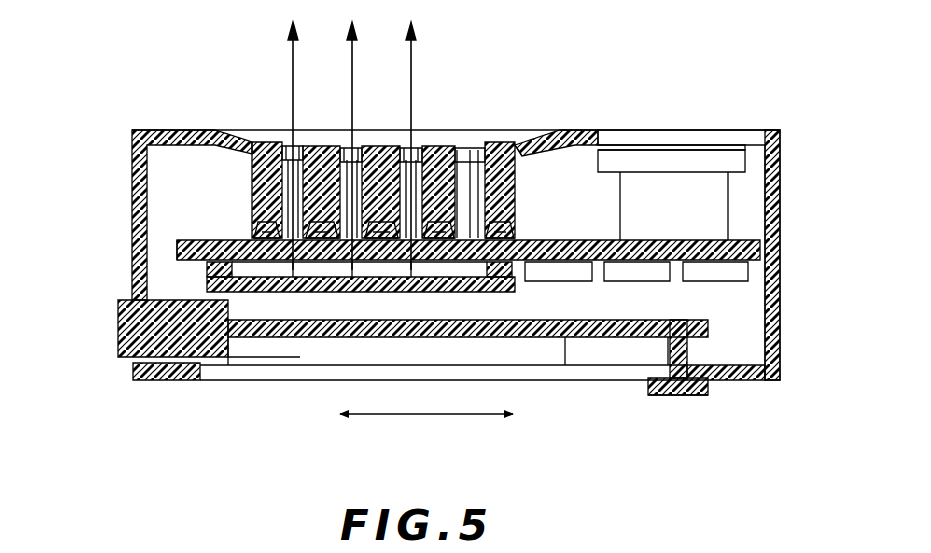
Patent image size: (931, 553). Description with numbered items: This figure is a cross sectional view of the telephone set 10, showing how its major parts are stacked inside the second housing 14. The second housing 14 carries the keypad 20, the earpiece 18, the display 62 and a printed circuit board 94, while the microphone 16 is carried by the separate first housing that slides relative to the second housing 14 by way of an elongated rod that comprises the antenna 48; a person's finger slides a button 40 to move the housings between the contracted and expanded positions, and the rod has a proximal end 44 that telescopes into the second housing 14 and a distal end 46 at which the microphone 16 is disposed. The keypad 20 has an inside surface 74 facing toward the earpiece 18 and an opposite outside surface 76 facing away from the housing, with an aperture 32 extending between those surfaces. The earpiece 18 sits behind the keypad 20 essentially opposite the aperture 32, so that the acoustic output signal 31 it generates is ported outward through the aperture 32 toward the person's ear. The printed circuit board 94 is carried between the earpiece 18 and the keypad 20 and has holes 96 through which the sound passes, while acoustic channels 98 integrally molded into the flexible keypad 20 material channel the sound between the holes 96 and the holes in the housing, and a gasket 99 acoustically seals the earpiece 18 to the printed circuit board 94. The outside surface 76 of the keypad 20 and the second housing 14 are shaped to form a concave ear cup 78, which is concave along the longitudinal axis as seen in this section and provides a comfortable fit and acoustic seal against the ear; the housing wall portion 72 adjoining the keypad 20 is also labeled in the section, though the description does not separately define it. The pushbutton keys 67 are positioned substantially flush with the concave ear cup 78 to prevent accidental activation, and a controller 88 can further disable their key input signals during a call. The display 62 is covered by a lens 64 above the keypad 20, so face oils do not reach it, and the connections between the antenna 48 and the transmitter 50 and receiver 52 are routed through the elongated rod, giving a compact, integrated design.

The telephone set 10 is at (742, 502).
The second housing 14 is at (780, 163).
The microphone 16 is at (118, 362).
The earpiece 18 is at (207, 286).
The keypad 20 is at (462, 148).
The acoustic output signal 31 is at (354, 135).
The aperture 32 is at (300, 170).
The button 40 is at (698, 396).
The proximal end 44 is at (708, 330).
The distal end 46 is at (118, 316).
The antenna 48 is at (567, 340).
The transmitter 50 is at (560, 281).
The receiver 52 is at (637, 281).
The display 62 is at (712, 160).
The lens 64 is at (660, 145).
The pushbutton keys 67 is at (503, 140).
The housing wall 72 is at (250, 140).
The inside surface 74 is at (245, 238).
The outside surface 76 is at (390, 145).
The concave ear cup 78 is at (258, 138).
The controller 88 is at (716, 281).
The printed circuit board 94 is at (180, 240).
The holes 96 is at (295, 262).
The acoustic channels 98 is at (284, 146).
The gasket 99 is at (207, 270).